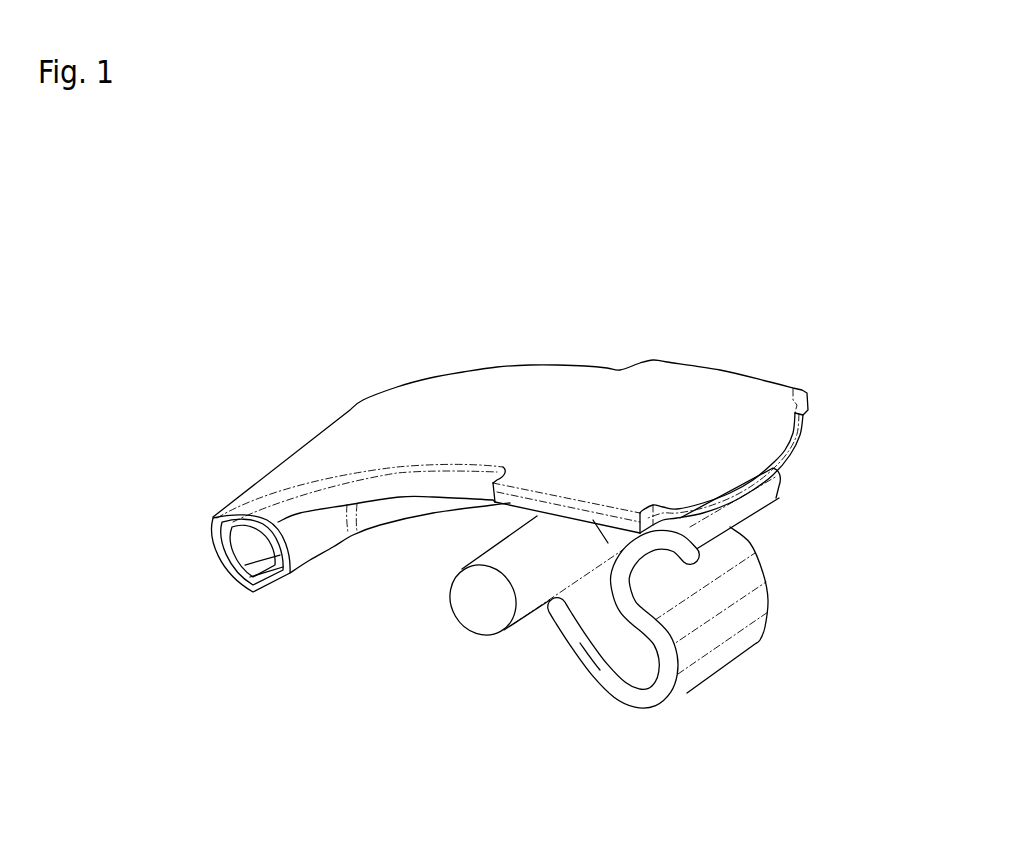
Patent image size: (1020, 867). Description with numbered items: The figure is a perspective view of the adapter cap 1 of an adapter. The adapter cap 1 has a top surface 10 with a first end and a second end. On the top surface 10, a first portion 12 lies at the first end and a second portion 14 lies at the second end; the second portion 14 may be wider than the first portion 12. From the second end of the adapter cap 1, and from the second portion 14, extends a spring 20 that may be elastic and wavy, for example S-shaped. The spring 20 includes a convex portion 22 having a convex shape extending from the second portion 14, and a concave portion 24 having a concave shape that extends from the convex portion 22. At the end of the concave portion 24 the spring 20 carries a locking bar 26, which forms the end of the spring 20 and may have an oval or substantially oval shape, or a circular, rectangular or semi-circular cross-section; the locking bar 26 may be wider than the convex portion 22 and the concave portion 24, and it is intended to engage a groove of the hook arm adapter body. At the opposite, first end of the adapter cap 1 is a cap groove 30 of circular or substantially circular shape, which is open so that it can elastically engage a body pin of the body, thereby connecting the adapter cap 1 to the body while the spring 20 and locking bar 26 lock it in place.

The adapter cap 1 is at (613, 237).
The top surface 10 is at (517, 367).
The first portion 12 is at (340, 443).
The second portion 14 is at (690, 423).
The spring 20 is at (730, 643).
The convex portion 22 is at (663, 568).
The concave portion 24 is at (670, 710).
The locking bar 26 is at (483, 603).
The cap groove 30 is at (255, 541).